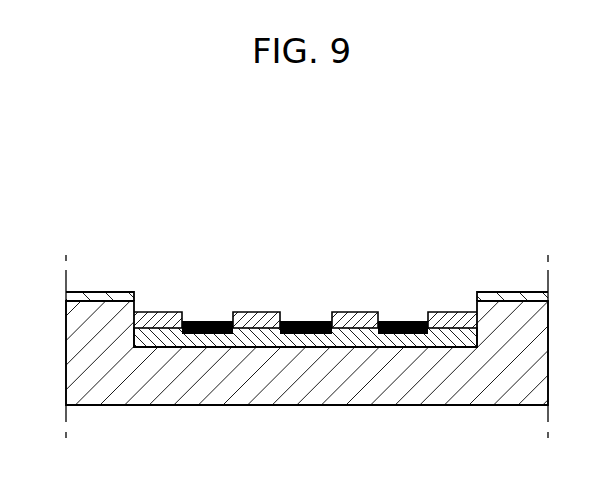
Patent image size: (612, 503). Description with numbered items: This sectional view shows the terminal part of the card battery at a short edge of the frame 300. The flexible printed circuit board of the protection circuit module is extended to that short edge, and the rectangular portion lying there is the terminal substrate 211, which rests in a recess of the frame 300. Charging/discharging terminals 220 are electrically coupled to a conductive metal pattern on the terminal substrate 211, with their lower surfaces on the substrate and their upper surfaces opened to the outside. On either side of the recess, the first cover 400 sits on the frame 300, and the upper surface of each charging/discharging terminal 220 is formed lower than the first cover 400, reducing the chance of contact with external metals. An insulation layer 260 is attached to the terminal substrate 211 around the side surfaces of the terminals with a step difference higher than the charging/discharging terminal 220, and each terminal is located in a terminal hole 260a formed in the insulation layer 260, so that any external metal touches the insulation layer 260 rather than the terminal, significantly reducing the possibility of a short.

The frame 300 is at (245, 383).
The first cover 400 is at (512, 297).
The terminal substrate 211 is at (154, 343).
The insulation layer 260 is at (160, 320).
The charging/discharging terminal 220 is at (207, 322).
The terminal hole 260a is at (310, 323).